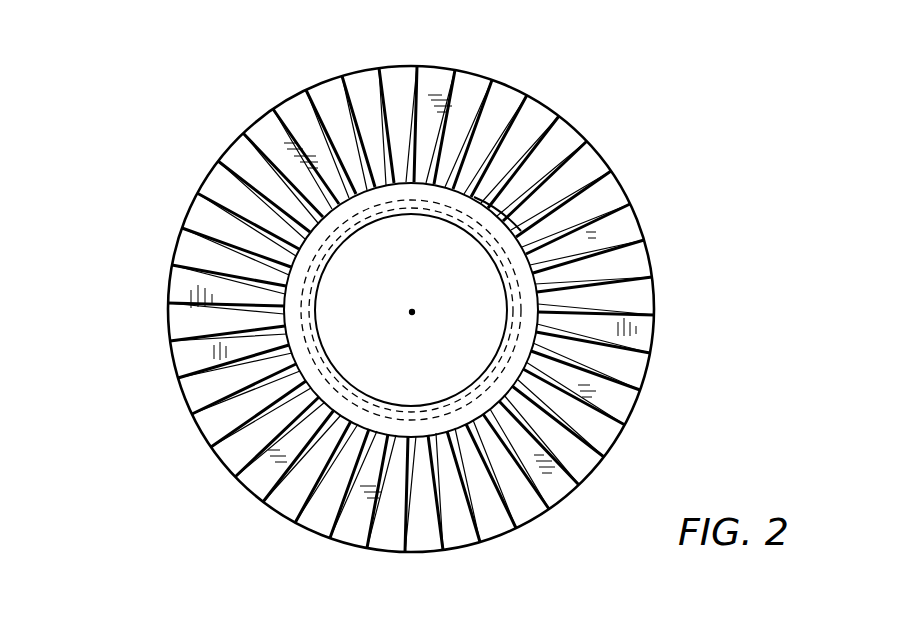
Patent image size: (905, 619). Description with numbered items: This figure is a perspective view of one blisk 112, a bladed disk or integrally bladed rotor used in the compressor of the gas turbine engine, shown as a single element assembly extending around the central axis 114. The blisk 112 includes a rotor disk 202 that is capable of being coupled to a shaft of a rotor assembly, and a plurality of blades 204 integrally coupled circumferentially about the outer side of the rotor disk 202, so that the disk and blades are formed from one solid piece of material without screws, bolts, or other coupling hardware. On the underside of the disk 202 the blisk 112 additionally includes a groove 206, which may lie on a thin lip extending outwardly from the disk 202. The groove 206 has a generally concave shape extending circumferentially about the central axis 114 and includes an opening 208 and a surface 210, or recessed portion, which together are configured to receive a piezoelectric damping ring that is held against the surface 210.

The blisk 112 is at (148, 126).
The central axis 114 is at (414, 313).
The rotor disk 202 is at (540, 308).
The blades 204 is at (272, 130).
The groove 206 is at (486, 232).
The opening 208 is at (466, 250).
The surface 210 is at (522, 284).